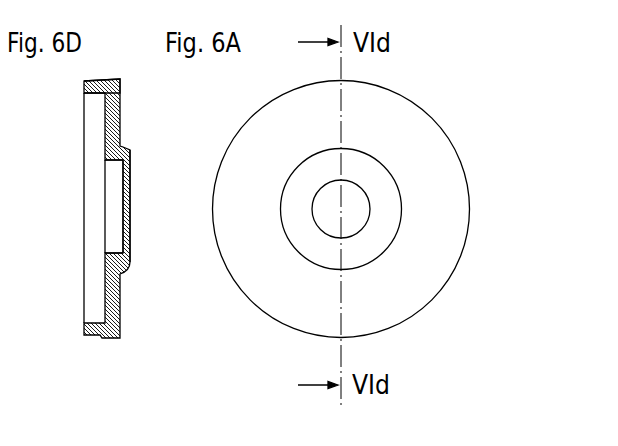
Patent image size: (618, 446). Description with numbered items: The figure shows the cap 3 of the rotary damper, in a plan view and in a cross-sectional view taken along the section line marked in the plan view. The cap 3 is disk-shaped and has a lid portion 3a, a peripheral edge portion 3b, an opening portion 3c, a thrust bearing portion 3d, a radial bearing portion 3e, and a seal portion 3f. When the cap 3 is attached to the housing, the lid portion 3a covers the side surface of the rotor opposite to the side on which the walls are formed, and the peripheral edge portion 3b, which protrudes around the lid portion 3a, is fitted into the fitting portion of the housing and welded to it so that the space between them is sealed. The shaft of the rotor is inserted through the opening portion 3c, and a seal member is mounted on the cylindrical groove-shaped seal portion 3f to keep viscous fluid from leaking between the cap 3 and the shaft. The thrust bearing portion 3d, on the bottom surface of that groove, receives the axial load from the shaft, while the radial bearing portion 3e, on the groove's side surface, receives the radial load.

In FIG. 6A, the cap 3 is at (468, 86).
In FIG. 6D, the lid portion 3a is at (121, 118).
In FIG. 6D, the peripheral edge portion 3b is at (85, 81).
In FIG. 6D, the opening portion 3c is at (128, 205).
In FIG. 6A, the opening portion 3c is at (360, 203).
In FIG. 6D, the thrust bearing portion 3d is at (123, 161).
In FIG. 6D, the radial bearing portion 3e is at (116, 252).
In FIG. 6D, the seal portion 3f is at (113, 205).